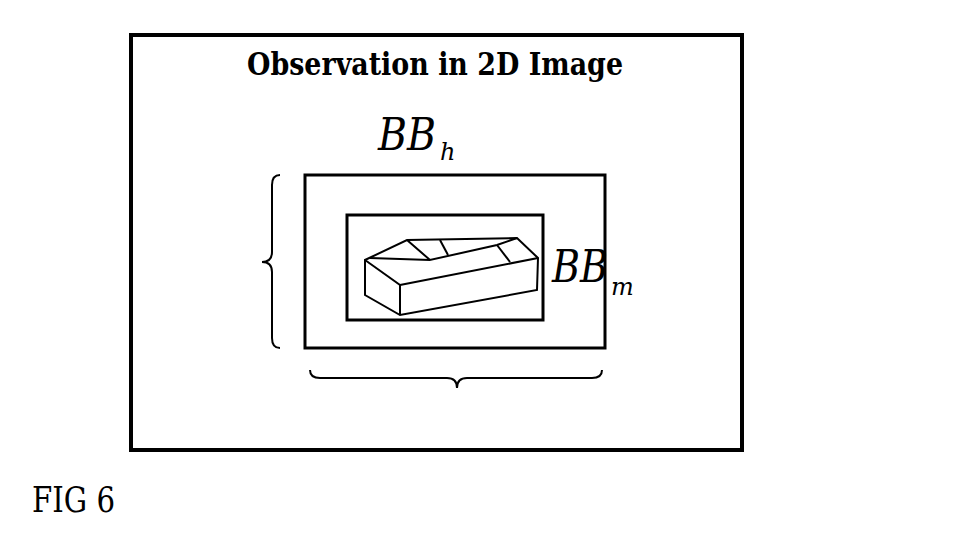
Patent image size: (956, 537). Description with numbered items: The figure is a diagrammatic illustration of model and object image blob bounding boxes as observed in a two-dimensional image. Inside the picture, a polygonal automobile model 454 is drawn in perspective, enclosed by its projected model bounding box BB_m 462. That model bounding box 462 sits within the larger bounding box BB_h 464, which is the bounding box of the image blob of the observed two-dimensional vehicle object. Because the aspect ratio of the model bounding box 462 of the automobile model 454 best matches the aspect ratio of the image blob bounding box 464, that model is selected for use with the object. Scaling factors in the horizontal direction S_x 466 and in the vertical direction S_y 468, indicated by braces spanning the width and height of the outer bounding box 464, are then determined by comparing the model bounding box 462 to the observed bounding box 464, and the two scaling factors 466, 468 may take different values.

The automobile model 454 is at (512, 290).
The bounding box BB_m 462 is at (547, 230).
The bounding box BB_h 464 is at (563, 172).
The horizontal scaling factor S_x 466 is at (421, 440).
The vertical scaling factor S_y 468 is at (181, 249).